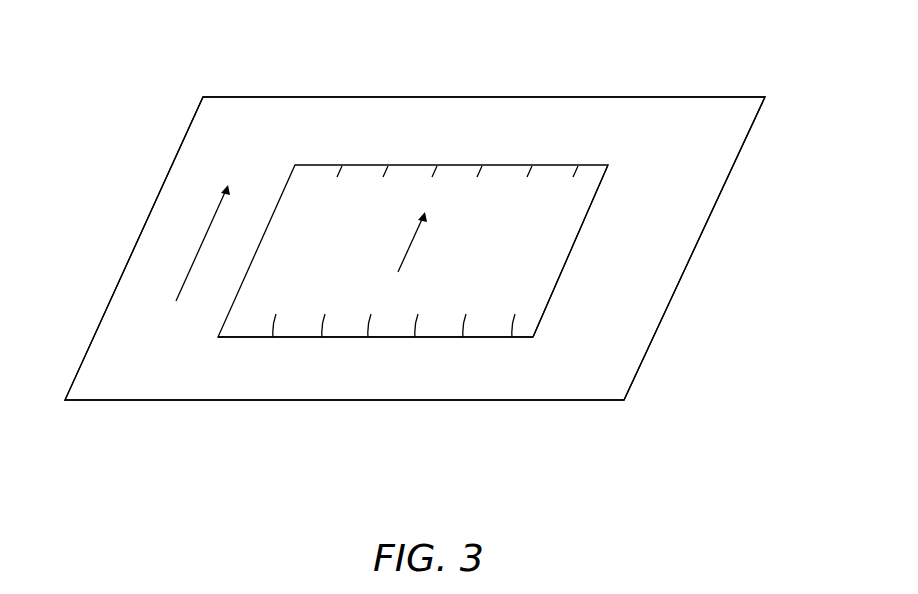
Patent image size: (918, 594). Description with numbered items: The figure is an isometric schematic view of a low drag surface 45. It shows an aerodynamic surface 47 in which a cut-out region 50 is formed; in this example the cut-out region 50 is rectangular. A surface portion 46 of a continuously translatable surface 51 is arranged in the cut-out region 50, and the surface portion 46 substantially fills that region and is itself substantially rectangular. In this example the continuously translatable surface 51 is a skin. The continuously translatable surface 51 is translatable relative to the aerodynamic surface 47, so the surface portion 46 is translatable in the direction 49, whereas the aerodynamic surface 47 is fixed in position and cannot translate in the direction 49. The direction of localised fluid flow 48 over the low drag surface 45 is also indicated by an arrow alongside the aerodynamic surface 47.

The low drag surface 45 is at (130, 87).
The surface portion 46 is at (533, 231).
The aerodynamic surface 47 is at (512, 118).
The direction of localised fluid flow 48 is at (204, 232).
The translatable direction 49 is at (405, 242).
The cut-out region 50 is at (553, 289).
The continuously translatable surface 51 is at (260, 325).